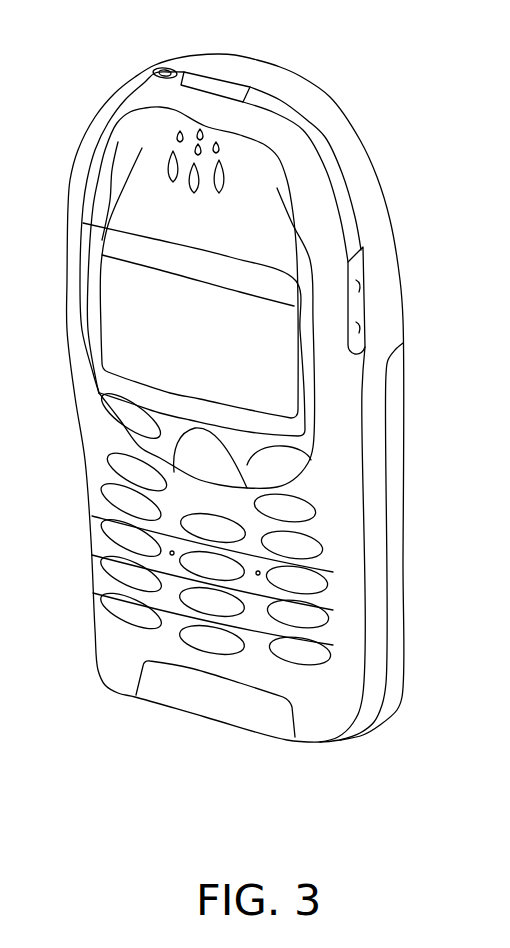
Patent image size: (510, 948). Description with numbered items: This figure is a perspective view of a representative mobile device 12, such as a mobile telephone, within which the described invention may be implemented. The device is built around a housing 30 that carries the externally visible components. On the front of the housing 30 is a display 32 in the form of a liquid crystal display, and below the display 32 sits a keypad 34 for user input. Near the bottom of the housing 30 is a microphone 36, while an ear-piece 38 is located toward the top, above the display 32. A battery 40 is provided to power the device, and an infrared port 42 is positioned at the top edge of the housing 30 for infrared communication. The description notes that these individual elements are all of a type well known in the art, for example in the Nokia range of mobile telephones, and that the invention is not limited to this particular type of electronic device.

The mobile device 12 is at (343, 62).
The housing 30 is at (378, 187).
The display 32 is at (280, 373).
The keypad 34 is at (297, 658).
The microphone 36 is at (159, 692).
The ear-piece 38 is at (187, 160).
The battery 40 is at (398, 640).
The infrared port 42 is at (219, 82).